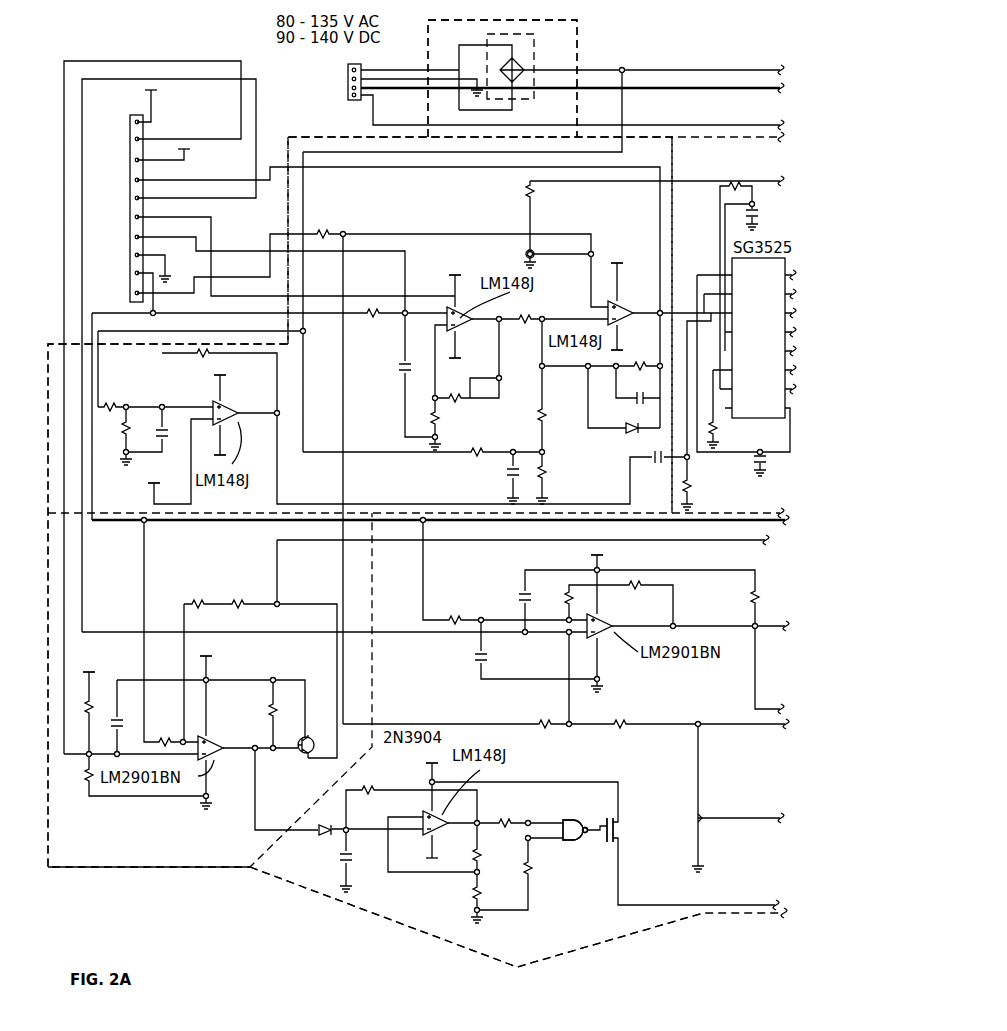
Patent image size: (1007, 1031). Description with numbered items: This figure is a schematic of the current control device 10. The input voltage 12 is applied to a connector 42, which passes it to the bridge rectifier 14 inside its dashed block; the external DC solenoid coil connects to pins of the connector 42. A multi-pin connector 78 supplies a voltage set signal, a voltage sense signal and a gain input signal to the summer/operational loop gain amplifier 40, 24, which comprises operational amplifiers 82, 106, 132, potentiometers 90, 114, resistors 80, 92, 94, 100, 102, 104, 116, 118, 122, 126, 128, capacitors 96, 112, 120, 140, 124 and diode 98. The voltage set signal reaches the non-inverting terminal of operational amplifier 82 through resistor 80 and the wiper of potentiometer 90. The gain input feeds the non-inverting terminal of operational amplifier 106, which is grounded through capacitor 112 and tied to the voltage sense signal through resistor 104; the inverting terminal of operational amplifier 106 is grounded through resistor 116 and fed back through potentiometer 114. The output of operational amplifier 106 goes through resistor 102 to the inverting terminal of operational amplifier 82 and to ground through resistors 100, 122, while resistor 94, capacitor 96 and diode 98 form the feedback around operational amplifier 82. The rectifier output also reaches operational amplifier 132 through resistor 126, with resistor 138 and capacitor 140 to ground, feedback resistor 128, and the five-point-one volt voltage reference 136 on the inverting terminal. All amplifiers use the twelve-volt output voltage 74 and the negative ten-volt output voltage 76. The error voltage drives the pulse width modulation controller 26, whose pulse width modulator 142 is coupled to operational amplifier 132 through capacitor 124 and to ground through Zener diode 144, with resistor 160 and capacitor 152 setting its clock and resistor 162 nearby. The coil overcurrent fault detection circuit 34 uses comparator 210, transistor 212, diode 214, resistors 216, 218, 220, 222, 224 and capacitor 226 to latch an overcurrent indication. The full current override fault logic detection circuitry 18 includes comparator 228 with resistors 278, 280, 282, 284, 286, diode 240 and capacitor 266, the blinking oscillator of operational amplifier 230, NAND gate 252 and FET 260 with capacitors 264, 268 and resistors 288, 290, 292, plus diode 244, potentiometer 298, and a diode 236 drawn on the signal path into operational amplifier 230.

The current control device 10 is at (704, 940).
The input voltage 12 is at (266, 18).
The bridge rectifier 14 is at (578, 20).
The full current override fault logic detection circuitry 18 is at (405, 926).
The summer/operational loop gain amplifier 24 is at (148, 585).
The pulse width modulation controller 26 is at (290, 137).
The coil overcurrent fault detection circuit 34 is at (88, 867).
The summer/operational loop gain amplifier 40 is at (47, 344).
The connector 42 is at (346, 70).
The 12V output voltage 74 is at (453, 274).
The negative 10V output voltage 76 is at (455, 360).
The connector 78 is at (136, 120).
The resistor 80 is at (323, 232).
The operational amplifier 82 is at (617, 311).
The potentiometer 90 is at (530, 252).
The resistor 92 is at (530, 192).
The resistor 94 is at (640, 366).
The capacitor 96 is at (640, 398).
The diode 98 is at (635, 428).
The resistor 100 is at (541, 410).
The resistor 102 is at (530, 318).
The resistor 104 is at (373, 316).
The operational amplifier 106 is at (450, 312).
The capacitor 112 is at (404, 367).
The potentiometer 114 is at (455, 396).
The resistor 116 is at (440, 437).
The resistor 118 is at (479, 450).
The capacitor 120 is at (509, 472).
The resistor 122 is at (544, 472).
The capacitor 124 is at (658, 464).
The resistor 126 is at (112, 404).
The resistor 128 is at (205, 356).
The operational amplifier 132 is at (226, 411).
The 5.1V voltage reference 136 is at (152, 486).
The resistor 138 is at (124, 438).
The capacitor 140 is at (163, 443).
The voltage mode pulse width modulator 142 is at (768, 376).
The Zener diode 144 is at (692, 493).
The capacitor 152 is at (756, 217).
The resistor 160 is at (739, 184).
The resistor 162 is at (718, 428).
The comparator 210 is at (212, 742).
The transistor 212 is at (304, 753).
The diode 214 is at (238, 602).
The resistor 216 is at (194, 603).
The resistor 218 is at (88, 704).
The resistor 220 is at (162, 740).
The resistor 222 is at (88, 774).
The resistor 224 is at (272, 708).
The capacitor 226 is at (121, 716).
The comparator 228 is at (610, 626).
The operational amplifier 230 is at (428, 812).
The diode 236 is at (320, 826).
The diode 240 is at (636, 586).
The diode 244 is at (372, 792).
The NAND gate 252 is at (566, 824).
The FET 260 is at (618, 815).
The capacitor 264 is at (476, 656).
The capacitor 266 is at (520, 598).
The capacitor 268 is at (343, 856).
The resistor 278 is at (758, 598).
The resistor 280 is at (569, 596).
The resistor 282 is at (455, 618).
The resistor 284 is at (545, 722).
The resistor 286 is at (621, 726).
The resistor 288 is at (531, 868).
The resistor 290 is at (476, 893).
The resistor 292 is at (478, 856).
The potentiometer 298 is at (700, 818).